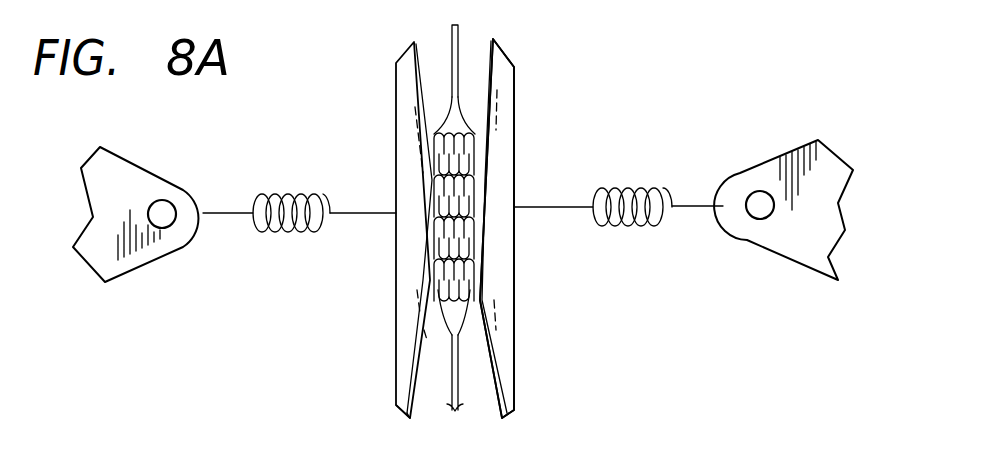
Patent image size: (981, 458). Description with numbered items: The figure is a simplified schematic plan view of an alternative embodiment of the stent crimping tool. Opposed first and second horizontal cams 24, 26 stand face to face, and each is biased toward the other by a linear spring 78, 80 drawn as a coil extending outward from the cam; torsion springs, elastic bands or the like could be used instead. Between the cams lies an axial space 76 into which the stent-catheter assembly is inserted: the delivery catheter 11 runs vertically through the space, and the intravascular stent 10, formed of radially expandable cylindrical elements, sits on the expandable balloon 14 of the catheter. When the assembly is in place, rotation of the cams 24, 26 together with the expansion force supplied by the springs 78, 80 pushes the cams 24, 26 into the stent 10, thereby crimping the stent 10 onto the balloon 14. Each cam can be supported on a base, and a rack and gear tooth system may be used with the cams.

The intravascular stent 10 is at (495, 134).
The delivery catheter 11 is at (462, 398).
The balloon 14 is at (450, 103).
The first horizontal cam 24 is at (408, 312).
The second horizontal cam 26 is at (493, 286).
The axial space 76 is at (430, 410).
The linear spring 78 is at (290, 182).
The linear spring 80 is at (634, 179).